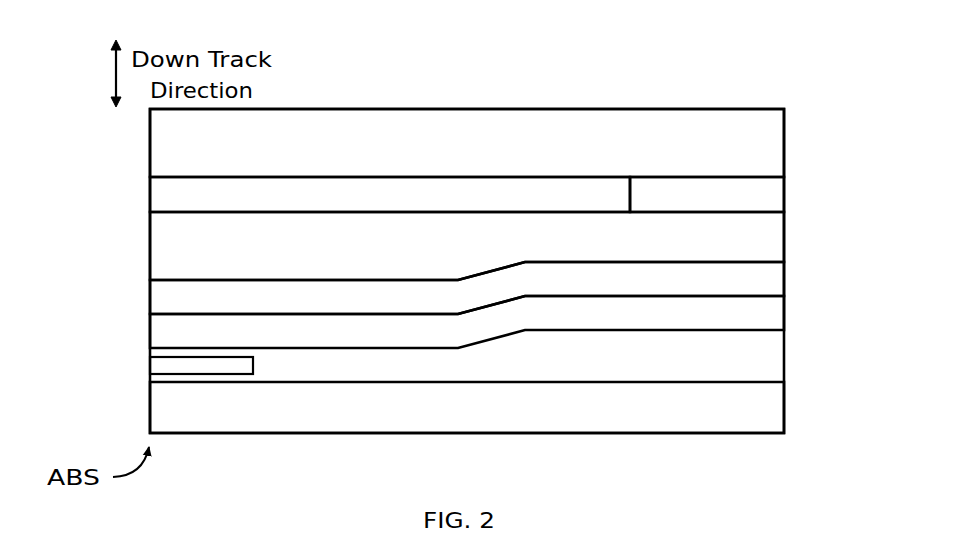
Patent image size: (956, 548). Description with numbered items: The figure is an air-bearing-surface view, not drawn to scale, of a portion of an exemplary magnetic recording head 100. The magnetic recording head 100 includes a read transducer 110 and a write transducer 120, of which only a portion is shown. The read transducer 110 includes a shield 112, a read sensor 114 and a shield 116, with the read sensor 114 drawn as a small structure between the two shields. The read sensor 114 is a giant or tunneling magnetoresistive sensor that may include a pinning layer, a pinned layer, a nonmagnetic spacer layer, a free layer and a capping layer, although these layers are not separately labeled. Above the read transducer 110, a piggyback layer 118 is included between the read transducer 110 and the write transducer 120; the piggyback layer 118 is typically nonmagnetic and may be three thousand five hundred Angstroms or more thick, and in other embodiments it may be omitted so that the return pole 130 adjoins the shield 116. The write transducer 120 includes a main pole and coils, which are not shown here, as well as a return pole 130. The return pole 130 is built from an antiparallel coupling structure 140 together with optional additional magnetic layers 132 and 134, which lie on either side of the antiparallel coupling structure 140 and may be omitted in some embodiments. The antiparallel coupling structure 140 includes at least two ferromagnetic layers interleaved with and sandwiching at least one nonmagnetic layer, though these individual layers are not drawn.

The magnetic recording head 100 is at (480, 34).
The read transducer 110 is at (113, 333).
The shield 112 is at (784, 415).
The read sensor 114 is at (150, 365).
The shield 116 is at (784, 312).
The piggyback layer 118 is at (150, 300).
The write transducer 120 is at (78, 160).
The return pole 130 is at (840, 120).
The additional magnetic layer 132 is at (784, 243).
The additional magnetic layer 134 is at (784, 142).
The antiparallel coupling (AC) structure 140 is at (150, 195).